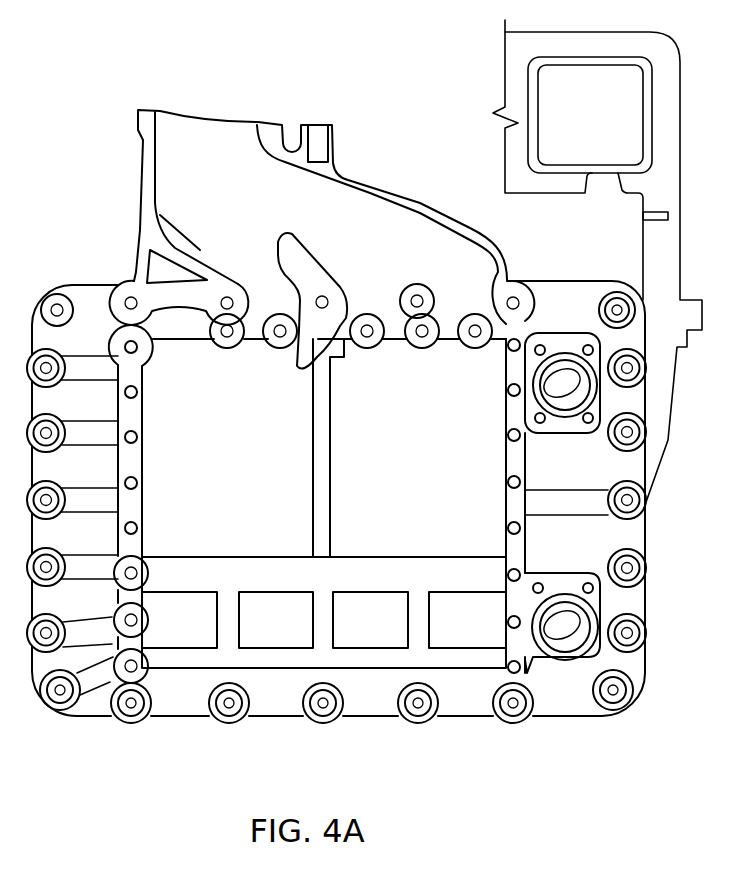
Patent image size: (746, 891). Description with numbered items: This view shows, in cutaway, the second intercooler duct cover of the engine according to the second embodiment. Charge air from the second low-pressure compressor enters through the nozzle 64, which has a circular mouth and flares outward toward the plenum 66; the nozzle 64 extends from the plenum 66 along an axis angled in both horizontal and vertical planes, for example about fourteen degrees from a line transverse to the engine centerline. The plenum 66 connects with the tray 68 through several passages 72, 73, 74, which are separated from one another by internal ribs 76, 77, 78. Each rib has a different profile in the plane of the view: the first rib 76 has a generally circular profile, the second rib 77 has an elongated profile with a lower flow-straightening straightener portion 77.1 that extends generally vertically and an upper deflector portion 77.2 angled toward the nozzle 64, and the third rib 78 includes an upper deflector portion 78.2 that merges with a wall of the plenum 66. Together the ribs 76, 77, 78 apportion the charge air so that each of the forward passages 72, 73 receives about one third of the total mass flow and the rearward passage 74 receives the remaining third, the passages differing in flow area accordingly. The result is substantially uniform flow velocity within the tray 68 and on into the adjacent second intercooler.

The nozzle 64 is at (189, 156).
The plenum 66 is at (164, 216).
The tray 68 is at (214, 471).
The passage 72 is at (448, 311).
The passage 73 is at (362, 311).
The passage 74 is at (258, 311).
The first rib 76 is at (416, 283).
The second rib 77 is at (328, 300).
The straightener portion 77.1 is at (333, 363).
The deflector portion 77.2 is at (290, 232).
The third rib 78 is at (250, 338).
The upper deflector portion 78.2 is at (185, 235).